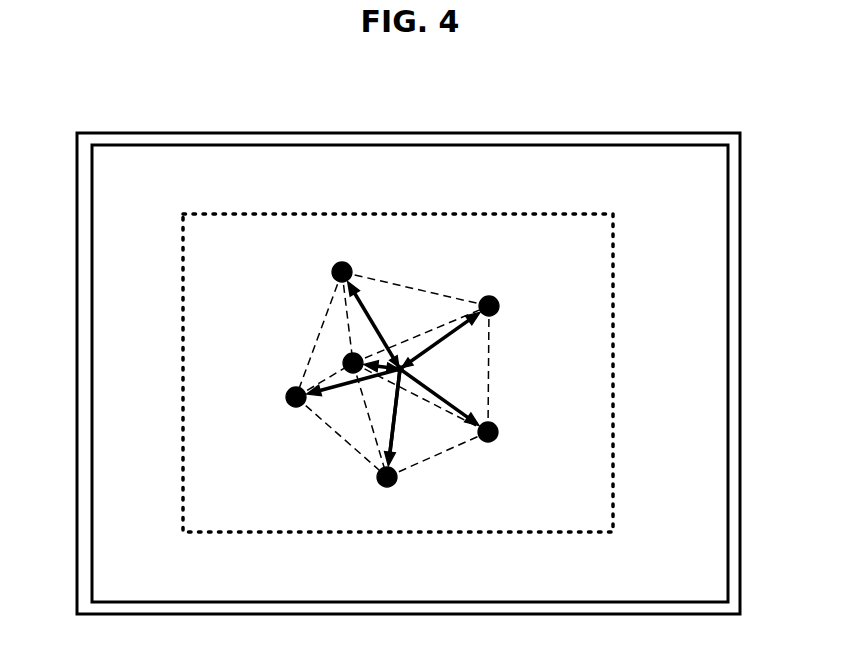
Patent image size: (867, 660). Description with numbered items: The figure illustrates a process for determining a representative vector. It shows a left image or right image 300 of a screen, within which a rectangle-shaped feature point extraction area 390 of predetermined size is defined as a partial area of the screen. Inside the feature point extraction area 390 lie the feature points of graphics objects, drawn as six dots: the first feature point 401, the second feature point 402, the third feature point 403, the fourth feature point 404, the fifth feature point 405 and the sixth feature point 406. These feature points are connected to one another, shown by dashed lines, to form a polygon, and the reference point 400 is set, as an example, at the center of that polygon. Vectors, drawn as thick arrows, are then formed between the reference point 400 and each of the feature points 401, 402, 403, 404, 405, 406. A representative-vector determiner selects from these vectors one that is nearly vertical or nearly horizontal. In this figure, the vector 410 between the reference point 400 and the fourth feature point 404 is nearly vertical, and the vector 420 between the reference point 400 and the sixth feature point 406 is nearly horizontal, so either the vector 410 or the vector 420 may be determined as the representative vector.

The left image or right image 300 is at (388, 158).
The feature point extraction area 390 is at (591, 214).
The reference point 400 is at (401, 366).
The representative vector 420 is at (399, 367).
The first feature point 401 is at (338, 274).
The second feature point 402 is at (492, 303).
The third feature point 403 is at (491, 428).
The fourth feature point 404 is at (388, 486).
The fifth feature point 405 is at (292, 402).
The sixth feature point 406 is at (352, 363).
The representative vector 410 is at (395, 428).